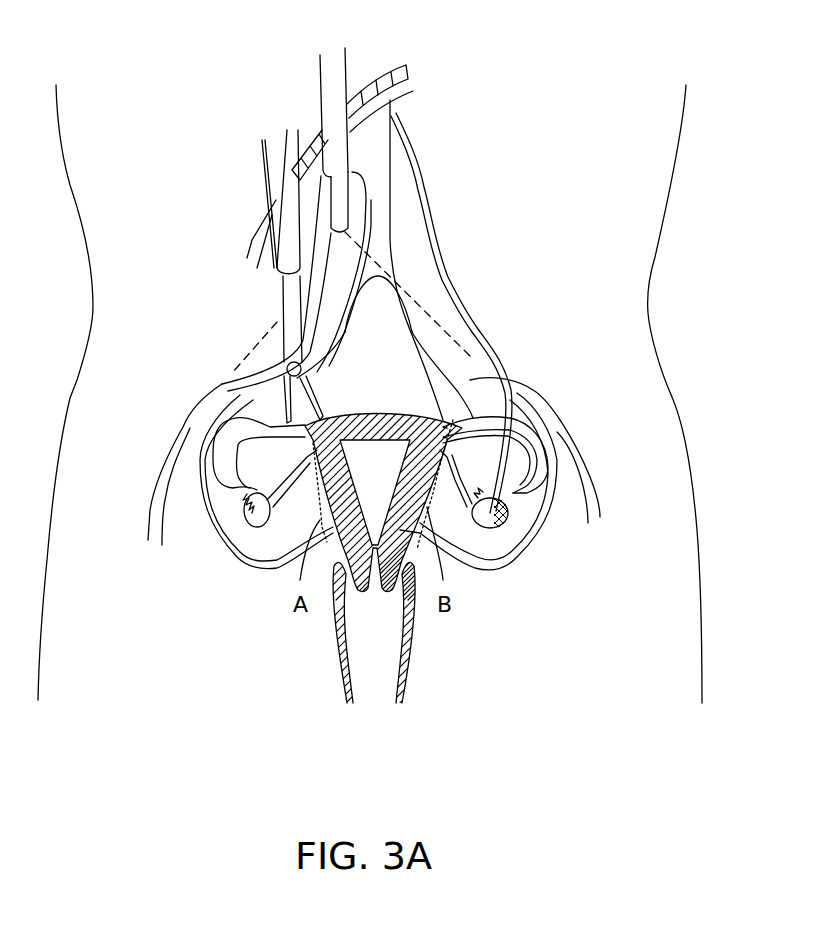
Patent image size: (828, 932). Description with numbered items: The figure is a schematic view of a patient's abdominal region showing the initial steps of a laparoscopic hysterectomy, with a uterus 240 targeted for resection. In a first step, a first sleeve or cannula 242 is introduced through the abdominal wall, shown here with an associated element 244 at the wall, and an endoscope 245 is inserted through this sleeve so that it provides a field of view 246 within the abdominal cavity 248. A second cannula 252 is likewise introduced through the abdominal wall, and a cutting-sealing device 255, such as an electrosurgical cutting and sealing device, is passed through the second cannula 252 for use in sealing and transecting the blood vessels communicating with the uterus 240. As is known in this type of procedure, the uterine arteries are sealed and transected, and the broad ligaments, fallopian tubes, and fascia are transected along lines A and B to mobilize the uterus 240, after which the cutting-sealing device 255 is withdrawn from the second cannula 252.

The uterus 240 is at (386, 420).
The first sleeve or cannula 242 is at (348, 63).
The retention band 244 is at (408, 92).
The endoscope 245 is at (337, 200).
The field of view 246 is at (447, 330).
The abdominal cavity 248 is at (413, 370).
The second cannula 252 is at (272, 187).
The cutting-sealing device 255 is at (287, 327).